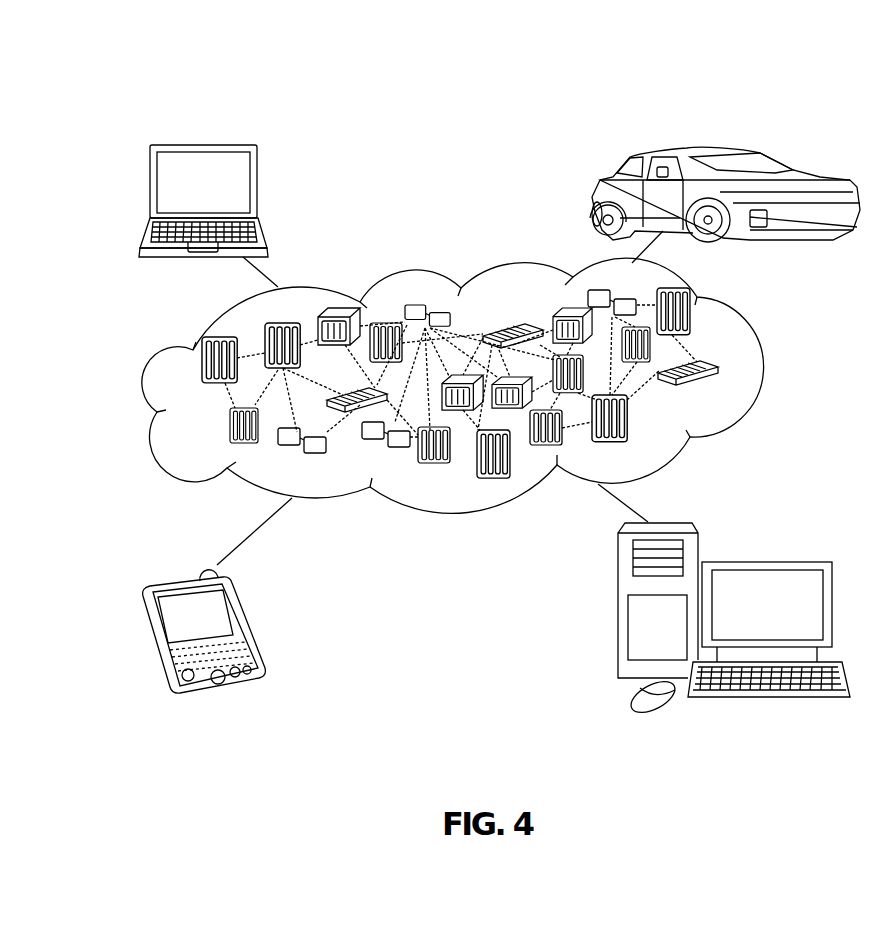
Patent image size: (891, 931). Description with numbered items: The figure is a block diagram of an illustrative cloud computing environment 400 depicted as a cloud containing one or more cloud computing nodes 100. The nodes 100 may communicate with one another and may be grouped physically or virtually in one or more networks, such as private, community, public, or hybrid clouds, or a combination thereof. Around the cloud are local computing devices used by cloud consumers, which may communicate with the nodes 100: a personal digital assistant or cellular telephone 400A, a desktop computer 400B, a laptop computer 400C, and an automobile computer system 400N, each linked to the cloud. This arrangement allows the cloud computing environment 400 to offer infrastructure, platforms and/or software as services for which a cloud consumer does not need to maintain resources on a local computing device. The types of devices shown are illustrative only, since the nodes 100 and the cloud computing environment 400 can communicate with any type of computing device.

The cloud computing environment 400 is at (88, 66).
The cloud computing nodes 100 is at (728, 392).
The personal digital assistant (PDA) or cellular telephone 400A is at (248, 625).
The desktop computer 400B is at (765, 560).
The laptop computer 400C is at (260, 187).
The automobile computer system 400N is at (598, 198).